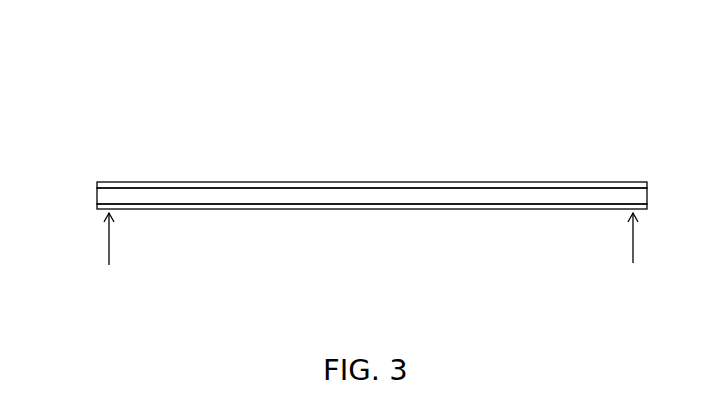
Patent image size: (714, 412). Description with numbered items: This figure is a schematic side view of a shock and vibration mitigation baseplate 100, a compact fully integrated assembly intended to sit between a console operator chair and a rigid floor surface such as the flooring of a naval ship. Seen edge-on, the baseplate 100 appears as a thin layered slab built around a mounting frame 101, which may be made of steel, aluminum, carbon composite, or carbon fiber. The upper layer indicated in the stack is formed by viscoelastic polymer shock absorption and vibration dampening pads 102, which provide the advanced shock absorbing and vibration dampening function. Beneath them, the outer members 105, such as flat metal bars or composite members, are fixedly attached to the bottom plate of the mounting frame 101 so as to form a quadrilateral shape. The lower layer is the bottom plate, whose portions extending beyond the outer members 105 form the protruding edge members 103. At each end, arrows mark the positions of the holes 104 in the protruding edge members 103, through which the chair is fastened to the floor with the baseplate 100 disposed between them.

The shock and vibration mitigation baseplate 100 is at (348, 158).
The mounting frame 101 is at (87, 183).
The viscoelastic polymer shock absorption and vibration dampening pads 102 is at (160, 185).
The protruding edge members 103 is at (208, 208).
The holes 104 is at (374, 251).
The outer members 105 is at (177, 195).